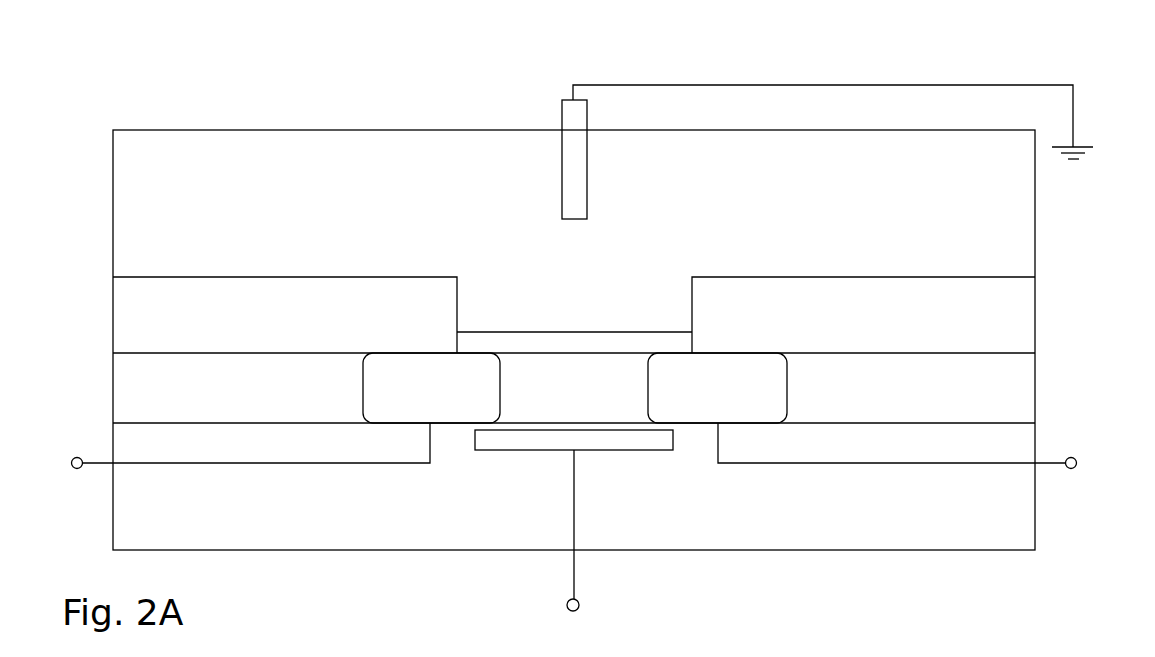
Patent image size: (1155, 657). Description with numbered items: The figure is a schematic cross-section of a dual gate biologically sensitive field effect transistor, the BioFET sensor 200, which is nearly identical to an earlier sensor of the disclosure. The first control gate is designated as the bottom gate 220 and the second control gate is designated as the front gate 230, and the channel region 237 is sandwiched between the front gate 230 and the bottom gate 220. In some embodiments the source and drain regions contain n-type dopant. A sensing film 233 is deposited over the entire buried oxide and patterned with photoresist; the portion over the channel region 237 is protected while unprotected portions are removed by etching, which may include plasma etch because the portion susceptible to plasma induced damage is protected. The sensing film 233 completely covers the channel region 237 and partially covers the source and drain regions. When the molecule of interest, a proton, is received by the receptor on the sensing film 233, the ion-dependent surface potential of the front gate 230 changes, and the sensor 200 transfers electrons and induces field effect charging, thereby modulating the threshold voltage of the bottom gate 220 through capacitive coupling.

The BioFET sensor 200 is at (148, 50).
The bottom gate 220 is at (674, 467).
The front gate 230 is at (513, 284).
The sensing film 233 is at (626, 337).
The channel region 237 is at (590, 378).